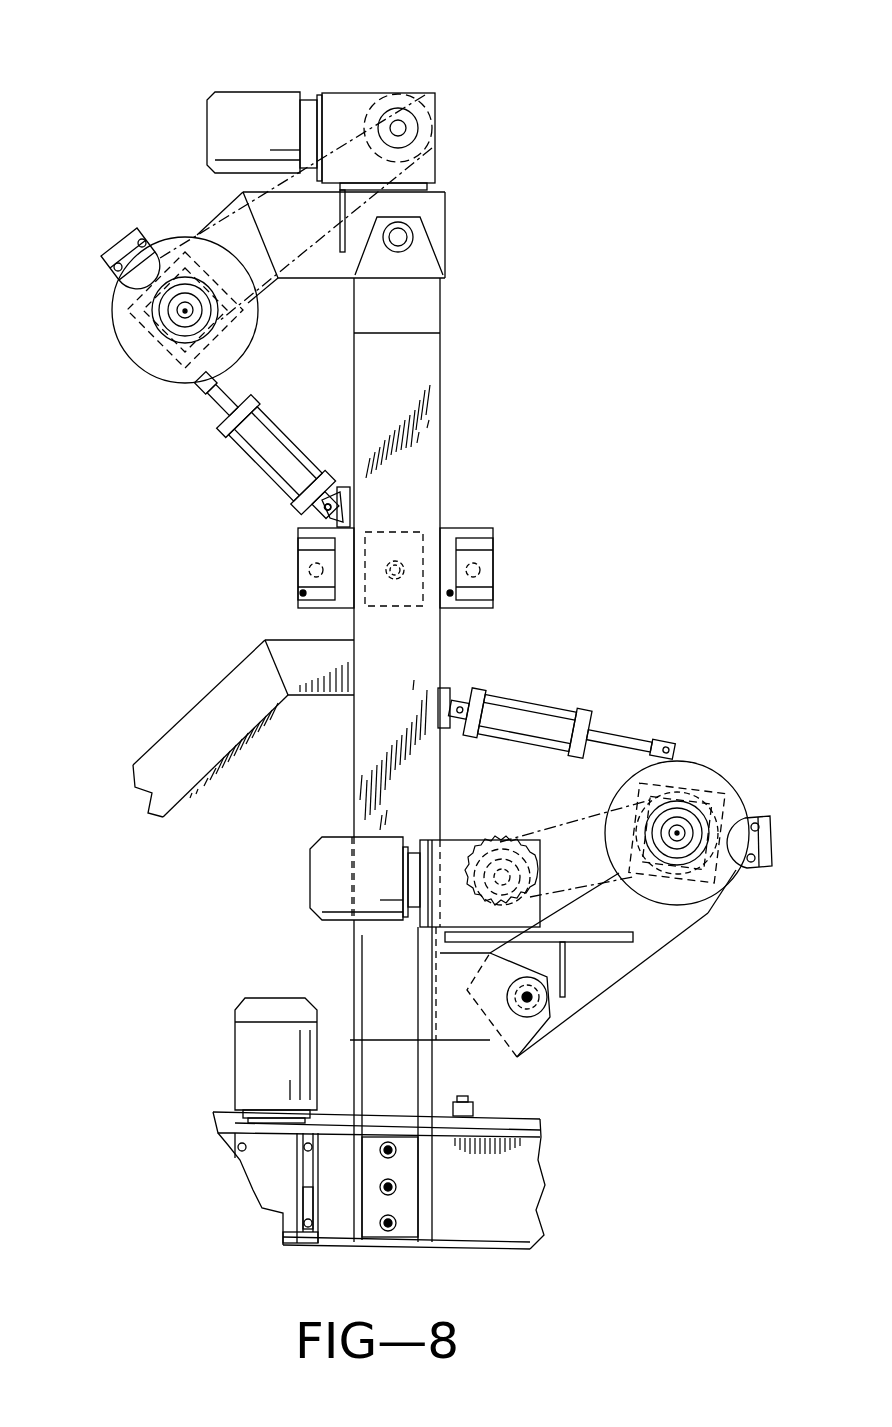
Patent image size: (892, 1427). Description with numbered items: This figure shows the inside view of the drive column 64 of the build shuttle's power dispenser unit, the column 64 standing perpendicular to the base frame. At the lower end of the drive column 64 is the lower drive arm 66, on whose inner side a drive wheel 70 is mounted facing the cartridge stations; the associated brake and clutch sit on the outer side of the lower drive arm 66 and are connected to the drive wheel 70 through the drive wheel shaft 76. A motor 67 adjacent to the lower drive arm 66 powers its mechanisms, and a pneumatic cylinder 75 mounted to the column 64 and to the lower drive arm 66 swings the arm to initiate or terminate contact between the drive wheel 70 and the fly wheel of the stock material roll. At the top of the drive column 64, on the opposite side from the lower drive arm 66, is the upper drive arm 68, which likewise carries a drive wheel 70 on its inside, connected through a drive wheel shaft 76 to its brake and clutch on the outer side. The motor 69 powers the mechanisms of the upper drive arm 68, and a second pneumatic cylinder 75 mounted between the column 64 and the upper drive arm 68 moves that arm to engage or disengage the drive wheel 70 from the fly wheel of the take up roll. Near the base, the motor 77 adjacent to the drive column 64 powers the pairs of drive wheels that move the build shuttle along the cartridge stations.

The drive column 64 is at (443, 412).
The lower drive arm 66 is at (665, 960).
The motor 67 is at (322, 873).
The upper drive arm 68 is at (168, 212).
The motor 69 is at (247, 96).
The drive wheel 70 is at (180, 312).
The pneumatic cylinder 75 is at (270, 453).
The drive wheel shaft 76 is at (185, 317).
The motor 77 is at (237, 1053).